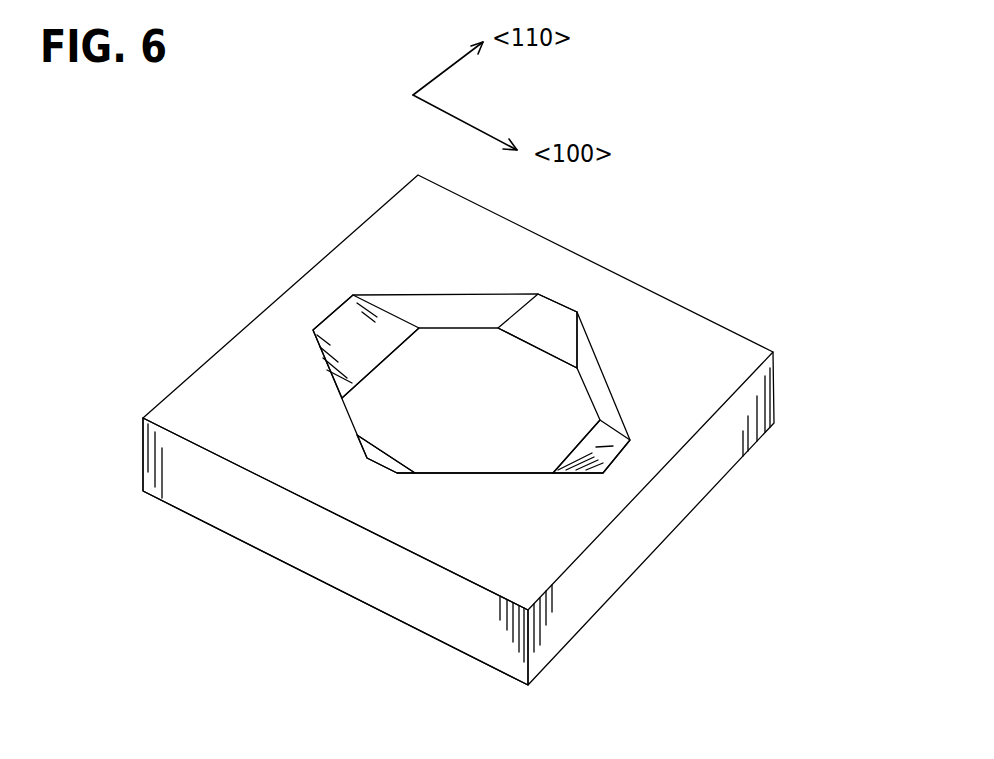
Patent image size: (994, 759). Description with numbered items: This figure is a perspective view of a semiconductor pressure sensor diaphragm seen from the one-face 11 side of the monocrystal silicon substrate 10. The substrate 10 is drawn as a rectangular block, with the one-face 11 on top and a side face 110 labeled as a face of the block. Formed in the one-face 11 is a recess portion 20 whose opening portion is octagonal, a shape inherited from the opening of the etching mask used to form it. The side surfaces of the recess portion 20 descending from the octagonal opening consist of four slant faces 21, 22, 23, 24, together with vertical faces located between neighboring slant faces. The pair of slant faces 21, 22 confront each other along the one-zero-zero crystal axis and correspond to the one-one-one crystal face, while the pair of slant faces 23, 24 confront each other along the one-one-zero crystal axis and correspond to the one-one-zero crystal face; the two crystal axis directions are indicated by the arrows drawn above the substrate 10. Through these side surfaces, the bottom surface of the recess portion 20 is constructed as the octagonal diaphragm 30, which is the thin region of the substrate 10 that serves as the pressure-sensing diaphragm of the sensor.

The monocrystal silicon substrate 10 is at (775, 388).
The one-face 11 is at (703, 343).
The face 110 is at (467, 553).
The recess portion 20 is at (450, 293).
The slant face 21 is at (348, 333).
The slant face 22 is at (595, 448).
The slant face 23 is at (552, 322).
The slant face 24 is at (383, 460).
The diaphragm 30 is at (480, 412).